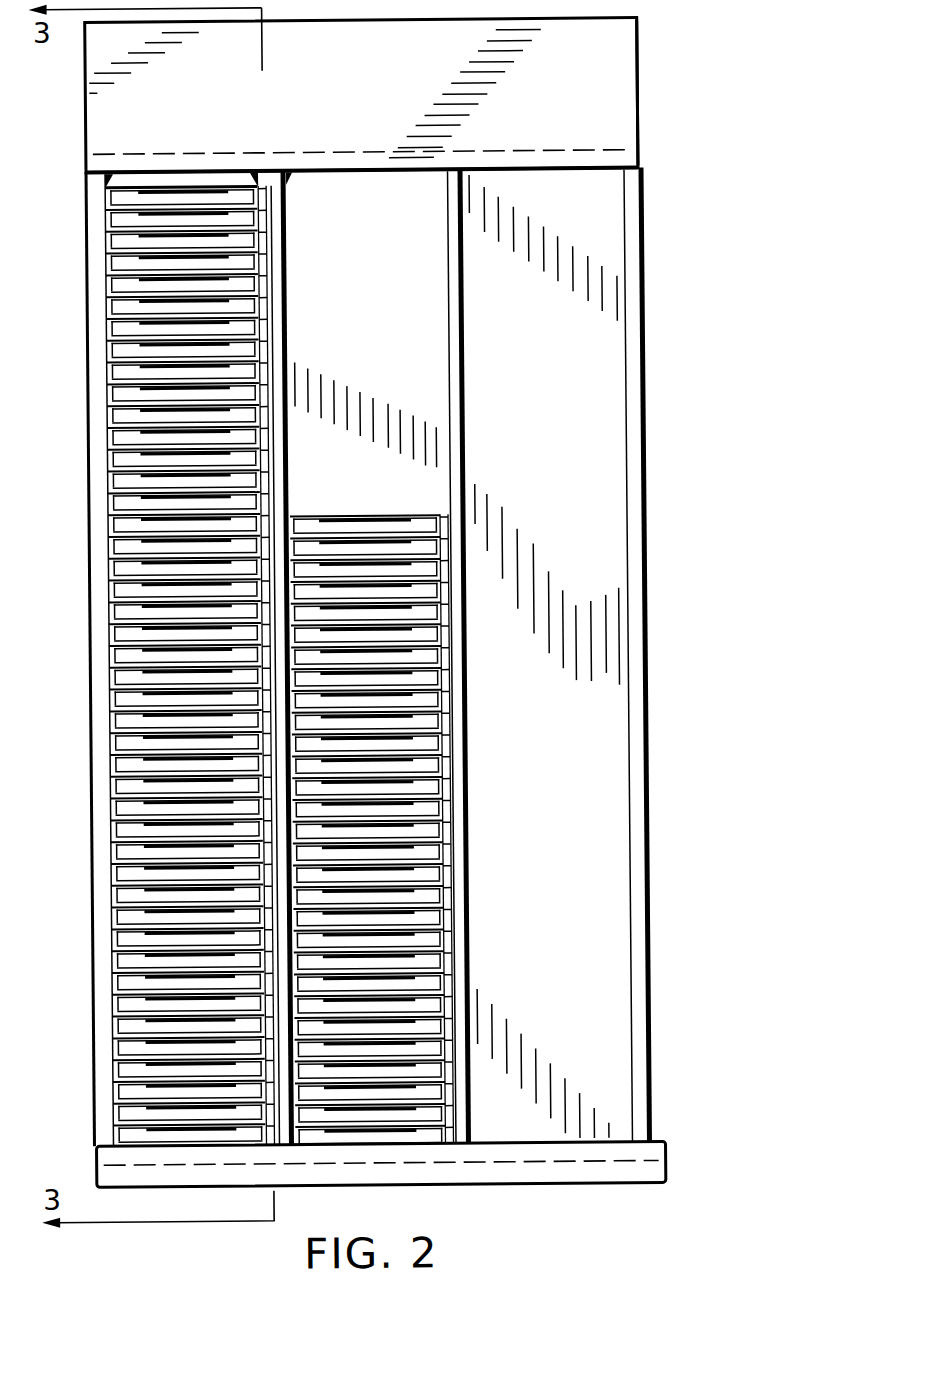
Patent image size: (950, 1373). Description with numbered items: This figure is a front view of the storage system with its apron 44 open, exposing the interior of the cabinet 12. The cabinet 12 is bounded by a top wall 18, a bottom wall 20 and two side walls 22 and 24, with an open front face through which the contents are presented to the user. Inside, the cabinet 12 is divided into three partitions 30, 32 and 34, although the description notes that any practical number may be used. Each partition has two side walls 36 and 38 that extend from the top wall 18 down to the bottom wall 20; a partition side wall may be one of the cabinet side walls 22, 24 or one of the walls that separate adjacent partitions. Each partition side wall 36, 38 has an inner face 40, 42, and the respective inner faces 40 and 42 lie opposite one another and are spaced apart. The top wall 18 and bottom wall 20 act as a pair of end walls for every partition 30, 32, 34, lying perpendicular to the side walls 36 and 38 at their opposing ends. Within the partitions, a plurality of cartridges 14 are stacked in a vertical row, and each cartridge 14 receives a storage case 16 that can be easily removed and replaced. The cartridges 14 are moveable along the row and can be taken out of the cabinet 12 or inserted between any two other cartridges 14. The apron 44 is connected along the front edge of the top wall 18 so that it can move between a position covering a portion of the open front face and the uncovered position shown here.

The cabinet 12 is at (692, 611).
The cartridge 14 is at (104, 618).
The storage case 16 is at (111, 653).
The top wall 18 is at (610, 142).
The bottom wall 20 is at (609, 1144).
The side wall 22 is at (86, 515).
The side wall 24 is at (647, 527).
The partition 30 is at (170, 182).
The partition 32 is at (370, 190).
The partition 34 is at (542, 193).
The partition side wall 36 is at (102, 224).
The partition side wall 38 is at (271, 232).
The inner face 40 is at (116, 165).
The inner face 42 is at (262, 182).
The apron 44 is at (626, 67).